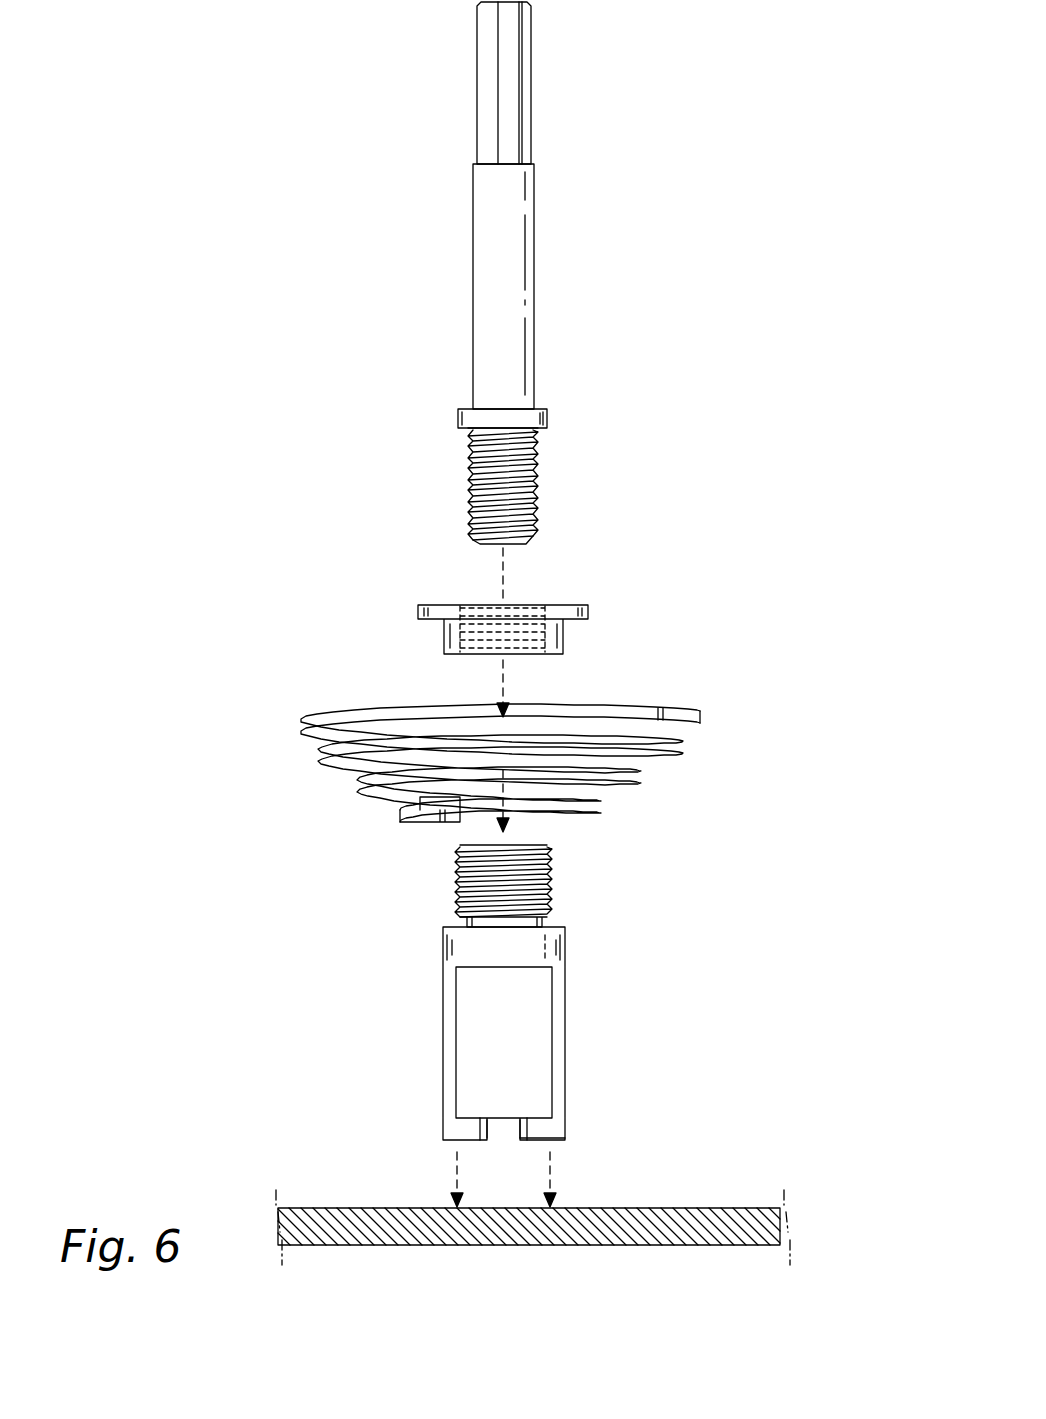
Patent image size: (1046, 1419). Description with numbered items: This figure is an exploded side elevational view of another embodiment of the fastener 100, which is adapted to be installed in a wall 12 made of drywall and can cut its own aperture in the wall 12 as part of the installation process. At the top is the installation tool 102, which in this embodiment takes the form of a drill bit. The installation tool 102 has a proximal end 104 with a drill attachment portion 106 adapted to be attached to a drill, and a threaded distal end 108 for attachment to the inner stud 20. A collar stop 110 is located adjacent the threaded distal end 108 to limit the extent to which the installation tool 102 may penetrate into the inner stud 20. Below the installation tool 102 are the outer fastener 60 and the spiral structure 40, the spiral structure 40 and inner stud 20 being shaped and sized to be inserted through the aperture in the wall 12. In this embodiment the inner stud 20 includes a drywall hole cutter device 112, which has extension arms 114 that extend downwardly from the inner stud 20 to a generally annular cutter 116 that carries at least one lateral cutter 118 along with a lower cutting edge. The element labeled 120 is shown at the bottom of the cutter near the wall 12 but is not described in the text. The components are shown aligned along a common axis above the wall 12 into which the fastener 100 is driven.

The fastener 100 is at (243, 192).
The proximal end 104 is at (559, 83).
The drill attachment portion 106 is at (513, 80).
The installation tool 102 is at (534, 275).
The collar stop 110 is at (547, 418).
The threaded distal end 108 is at (538, 508).
The outer fastener 60 is at (563, 637).
The spiral structure 40 is at (748, 724).
The inner stud 20 is at (523, 1014).
The drywall hole cutter device 112 is at (552, 905).
The extension arms 114 is at (556, 1055).
The annular cutter 116 is at (543, 1130).
The lateral cutter 118 is at (484, 1128).
The foot 120 is at (553, 1141).
The wall 12 is at (742, 1208).